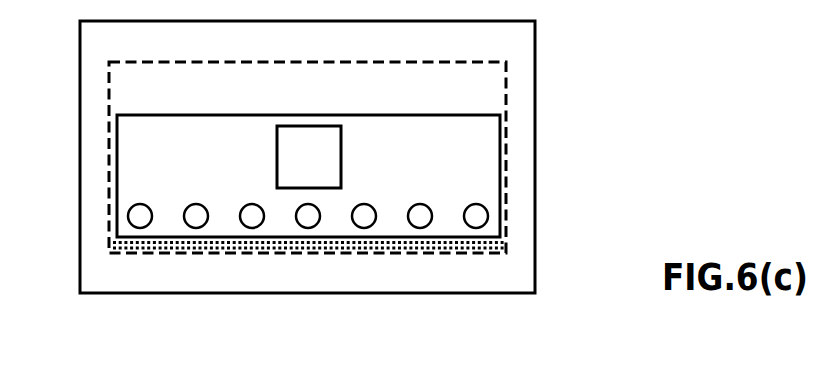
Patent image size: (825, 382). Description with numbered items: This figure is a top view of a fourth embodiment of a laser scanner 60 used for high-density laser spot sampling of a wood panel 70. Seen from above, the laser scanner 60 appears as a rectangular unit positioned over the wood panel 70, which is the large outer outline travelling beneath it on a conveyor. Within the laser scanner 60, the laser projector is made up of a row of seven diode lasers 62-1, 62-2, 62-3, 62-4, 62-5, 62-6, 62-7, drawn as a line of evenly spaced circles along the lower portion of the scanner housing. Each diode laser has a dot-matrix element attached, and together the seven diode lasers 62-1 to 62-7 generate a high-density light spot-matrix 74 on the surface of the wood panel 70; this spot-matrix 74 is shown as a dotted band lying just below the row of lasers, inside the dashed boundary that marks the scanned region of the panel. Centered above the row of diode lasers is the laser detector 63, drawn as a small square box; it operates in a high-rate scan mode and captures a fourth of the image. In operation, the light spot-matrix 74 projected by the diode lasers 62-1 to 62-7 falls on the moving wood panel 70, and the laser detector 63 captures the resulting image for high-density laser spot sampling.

The wood panel 70 is at (522, 108).
The laser scanner 60 is at (500, 177).
The high-density light spot-matrix 74 is at (507, 247).
The laser detector 63 is at (309, 157).
The diode laser 62-1 is at (153, 200).
The diode laser 62-2 is at (196, 204).
The diode laser 62-3 is at (238, 200).
The diode laser 62-4 is at (308, 228).
The diode laser 62-5 is at (377, 201).
The diode laser 62-6 is at (420, 204).
The diode laser 62-7 is at (463, 201).